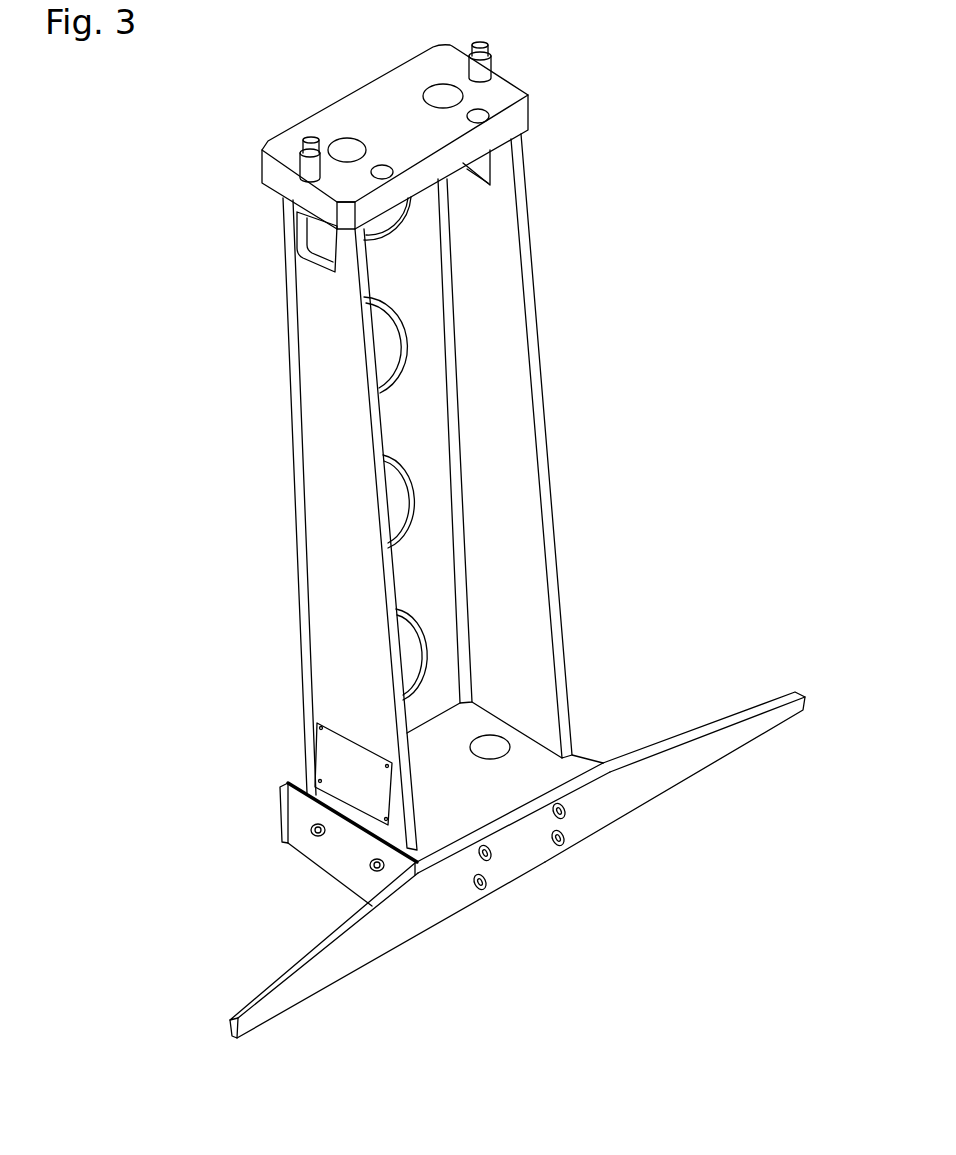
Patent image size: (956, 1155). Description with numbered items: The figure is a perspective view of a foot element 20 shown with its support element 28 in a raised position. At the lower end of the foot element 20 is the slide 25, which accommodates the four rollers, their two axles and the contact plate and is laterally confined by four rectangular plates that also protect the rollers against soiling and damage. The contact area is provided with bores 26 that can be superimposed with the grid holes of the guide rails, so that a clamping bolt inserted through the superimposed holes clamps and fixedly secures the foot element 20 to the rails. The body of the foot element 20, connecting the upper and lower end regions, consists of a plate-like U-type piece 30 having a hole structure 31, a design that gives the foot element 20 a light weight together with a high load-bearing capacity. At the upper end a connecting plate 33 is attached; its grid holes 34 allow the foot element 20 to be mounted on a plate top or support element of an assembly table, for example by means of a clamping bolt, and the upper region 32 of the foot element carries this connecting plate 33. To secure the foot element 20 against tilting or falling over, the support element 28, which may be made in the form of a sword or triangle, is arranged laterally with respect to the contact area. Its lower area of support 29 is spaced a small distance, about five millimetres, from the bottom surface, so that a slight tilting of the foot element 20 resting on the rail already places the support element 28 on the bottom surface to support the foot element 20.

The foot element 20 is at (500, 1063).
The slide 25 is at (333, 866).
The bore 26 is at (494, 748).
The support element 28 is at (703, 758).
The lower area of support 29 is at (603, 829).
The plate-like U-type piece 30 is at (543, 463).
The hole structure 31 is at (402, 473).
The top assembly 32 is at (546, 108).
The connecting plate 33 is at (510, 80).
The grid hole 34 is at (436, 97).